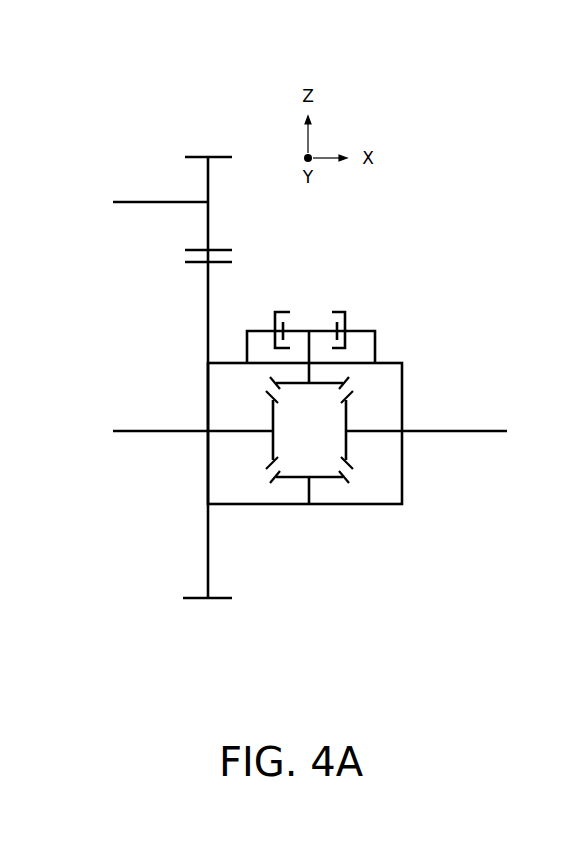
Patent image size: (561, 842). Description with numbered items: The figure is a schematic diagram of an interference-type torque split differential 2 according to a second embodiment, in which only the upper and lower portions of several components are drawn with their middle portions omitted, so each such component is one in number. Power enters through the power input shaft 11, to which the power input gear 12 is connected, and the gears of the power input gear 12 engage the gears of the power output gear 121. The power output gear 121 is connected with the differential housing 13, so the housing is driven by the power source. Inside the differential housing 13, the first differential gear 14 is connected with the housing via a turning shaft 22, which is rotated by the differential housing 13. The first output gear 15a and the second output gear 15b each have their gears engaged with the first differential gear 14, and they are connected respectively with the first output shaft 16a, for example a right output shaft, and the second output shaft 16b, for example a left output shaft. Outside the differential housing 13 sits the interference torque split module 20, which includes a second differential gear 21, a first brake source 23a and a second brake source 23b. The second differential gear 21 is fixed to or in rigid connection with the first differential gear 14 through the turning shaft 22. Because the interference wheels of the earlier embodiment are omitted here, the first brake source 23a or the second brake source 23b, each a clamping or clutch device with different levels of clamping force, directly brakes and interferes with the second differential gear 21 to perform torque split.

The interference-type torque split differential 2 is at (128, 108).
The power input shaft 11 is at (157, 202).
The power input gear 12 is at (207, 177).
The power output gear 121 is at (207, 328).
The differential housing 13 is at (403, 372).
The first differential gear 14 is at (325, 378).
The first output gear 15a is at (347, 448).
The second output gear 15b is at (271, 413).
The first output shaft 16a is at (380, 434).
The second output shaft 16b is at (243, 433).
The interference torque split module 20 is at (388, 269).
The second differential gear 21 is at (333, 322).
The turning shaft 22 is at (312, 352).
The first brake source 23a is at (348, 313).
The second brake source 23b is at (245, 342).